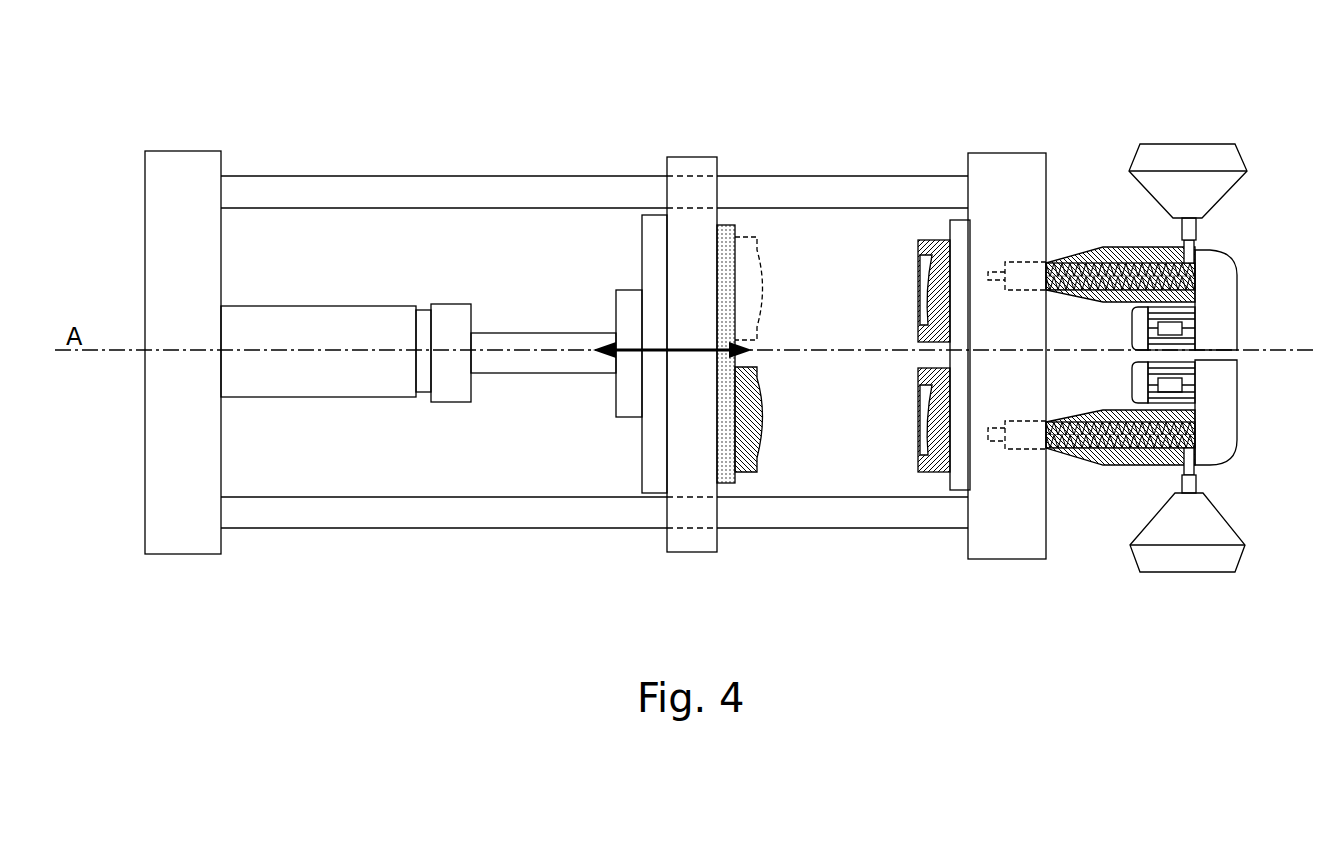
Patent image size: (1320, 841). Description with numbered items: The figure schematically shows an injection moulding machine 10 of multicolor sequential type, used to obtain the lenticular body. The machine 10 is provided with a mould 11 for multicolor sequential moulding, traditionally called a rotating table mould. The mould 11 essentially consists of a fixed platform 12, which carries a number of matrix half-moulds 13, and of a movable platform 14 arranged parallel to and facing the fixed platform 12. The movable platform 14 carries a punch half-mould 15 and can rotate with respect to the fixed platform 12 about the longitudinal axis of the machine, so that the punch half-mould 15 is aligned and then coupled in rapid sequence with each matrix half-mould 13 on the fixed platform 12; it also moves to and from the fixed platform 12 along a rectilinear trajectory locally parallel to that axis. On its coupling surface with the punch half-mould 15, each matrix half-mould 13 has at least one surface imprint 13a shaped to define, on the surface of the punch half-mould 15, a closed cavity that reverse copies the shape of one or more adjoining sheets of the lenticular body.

The injection moulding machine 10 is at (595, 429).
The mould 11 is at (829, 205).
The fixed platform 12 is at (957, 285).
The matrix half-mould 13 is at (930, 240).
The surface imprint 13a is at (918, 284).
The movable platform 14 is at (728, 303).
The punch half-mould 15 is at (760, 432).